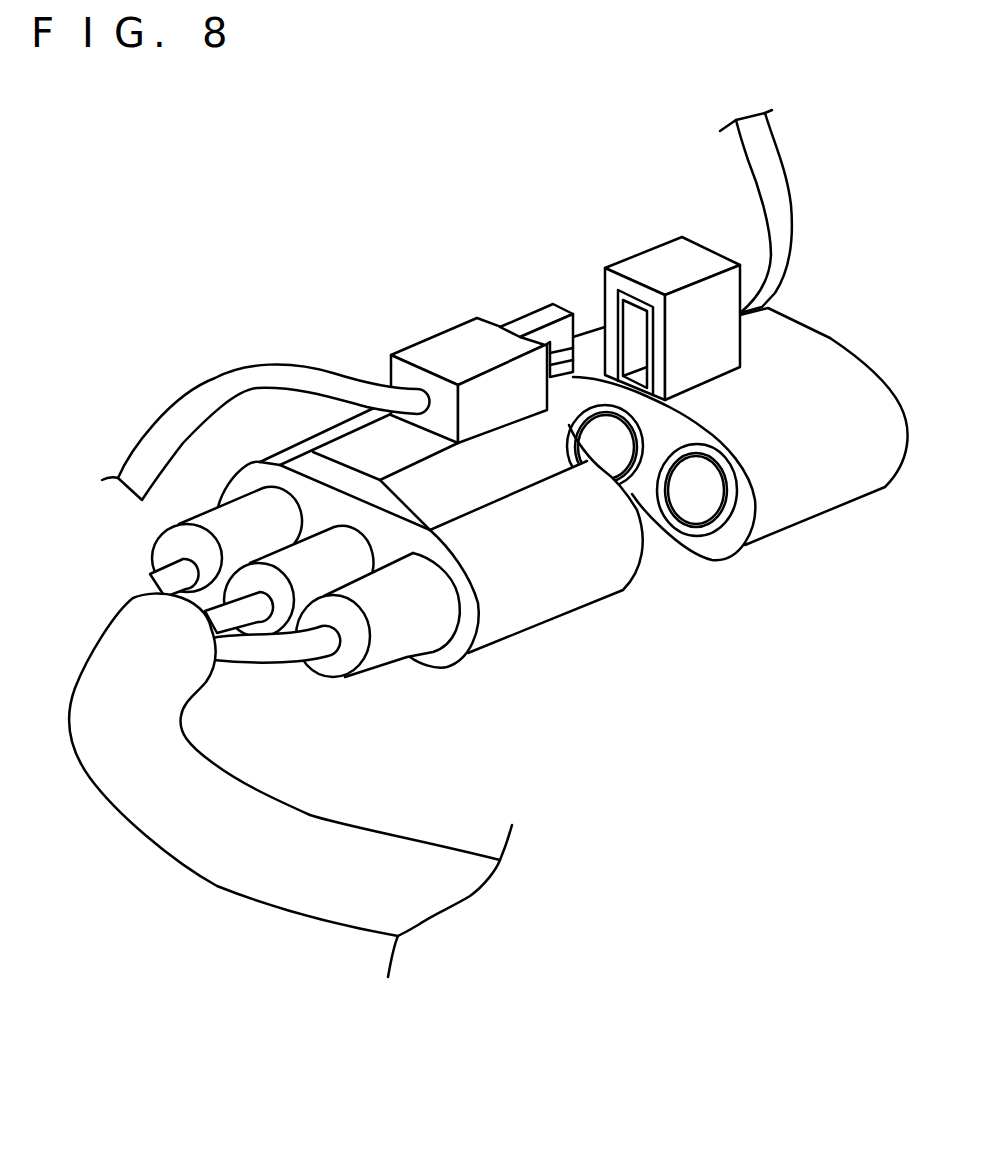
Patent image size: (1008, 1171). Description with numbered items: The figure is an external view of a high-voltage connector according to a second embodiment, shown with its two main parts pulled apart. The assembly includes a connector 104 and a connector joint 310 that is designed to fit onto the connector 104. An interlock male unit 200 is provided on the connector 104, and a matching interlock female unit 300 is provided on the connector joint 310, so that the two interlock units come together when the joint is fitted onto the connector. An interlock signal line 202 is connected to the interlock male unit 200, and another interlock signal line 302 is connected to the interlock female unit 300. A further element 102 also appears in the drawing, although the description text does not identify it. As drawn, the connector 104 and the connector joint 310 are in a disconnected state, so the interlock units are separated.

The cable bundle 102 is at (278, 888).
The connector 104 is at (555, 602).
The interlock male unit 200 is at (460, 343).
The interlock signal line 202 is at (215, 382).
The interlock female unit 300 is at (648, 260).
The interlock signal line 302 is at (757, 153).
The connector joint 310 is at (815, 497).